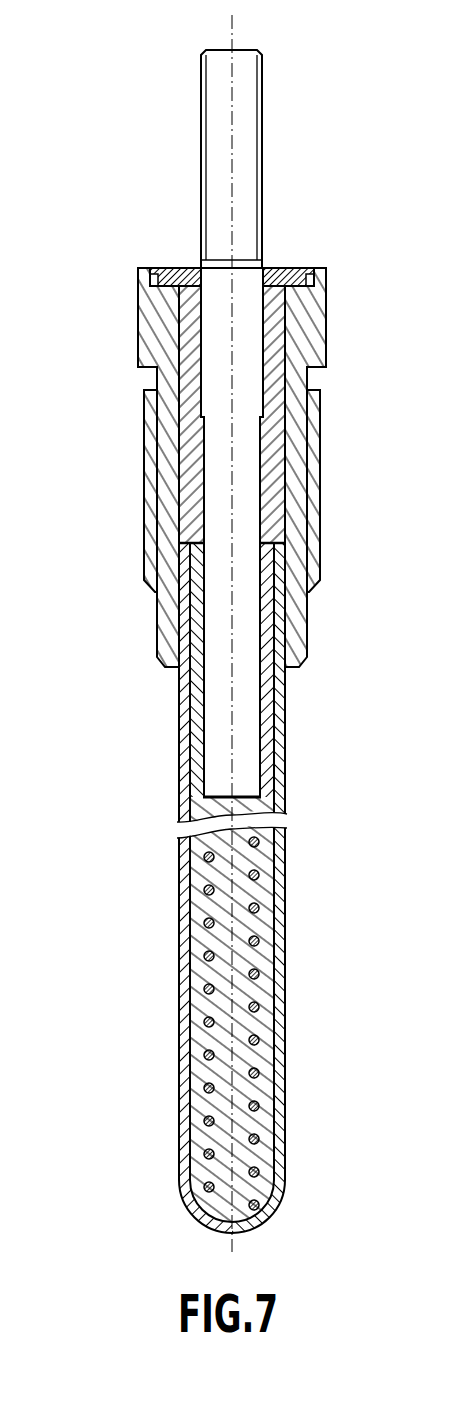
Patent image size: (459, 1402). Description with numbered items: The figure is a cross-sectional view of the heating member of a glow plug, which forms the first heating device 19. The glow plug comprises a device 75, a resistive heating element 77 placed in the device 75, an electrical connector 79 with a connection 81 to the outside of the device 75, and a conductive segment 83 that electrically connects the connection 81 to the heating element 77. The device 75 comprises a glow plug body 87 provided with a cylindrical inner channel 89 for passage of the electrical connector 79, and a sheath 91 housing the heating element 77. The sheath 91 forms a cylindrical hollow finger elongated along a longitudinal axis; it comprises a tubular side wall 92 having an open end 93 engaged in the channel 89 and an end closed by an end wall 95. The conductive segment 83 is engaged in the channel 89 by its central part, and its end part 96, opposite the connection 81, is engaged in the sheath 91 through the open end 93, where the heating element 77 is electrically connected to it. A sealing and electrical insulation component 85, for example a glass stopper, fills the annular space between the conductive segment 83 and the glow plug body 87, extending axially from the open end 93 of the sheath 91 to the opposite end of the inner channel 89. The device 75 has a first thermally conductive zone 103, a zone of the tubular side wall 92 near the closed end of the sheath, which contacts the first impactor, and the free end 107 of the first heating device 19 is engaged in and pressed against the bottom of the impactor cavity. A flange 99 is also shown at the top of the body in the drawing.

The first heating device 19 is at (146, 175).
The connection 81 is at (245, 149).
The flange 99 is at (289, 270).
The device 75 is at (141, 602).
The glow plug body 87 is at (155, 454).
The electrical connector 79 is at (214, 364).
The sealing and electrical insulation component 85 is at (274, 433).
The cylindrical inner channel 89 is at (194, 494).
The conductive segment 83 is at (248, 501).
The end part 96 is at (250, 773).
The open end 93 is at (300, 588).
The free end 107 is at (150, 1082).
The tubular side wall 92 is at (282, 908).
The first thermally conductive zone 103 is at (292, 1082).
The sheath 91 is at (171, 1165).
The end wall 95 is at (268, 1212).
The resistive heating element 77 is at (206, 992).